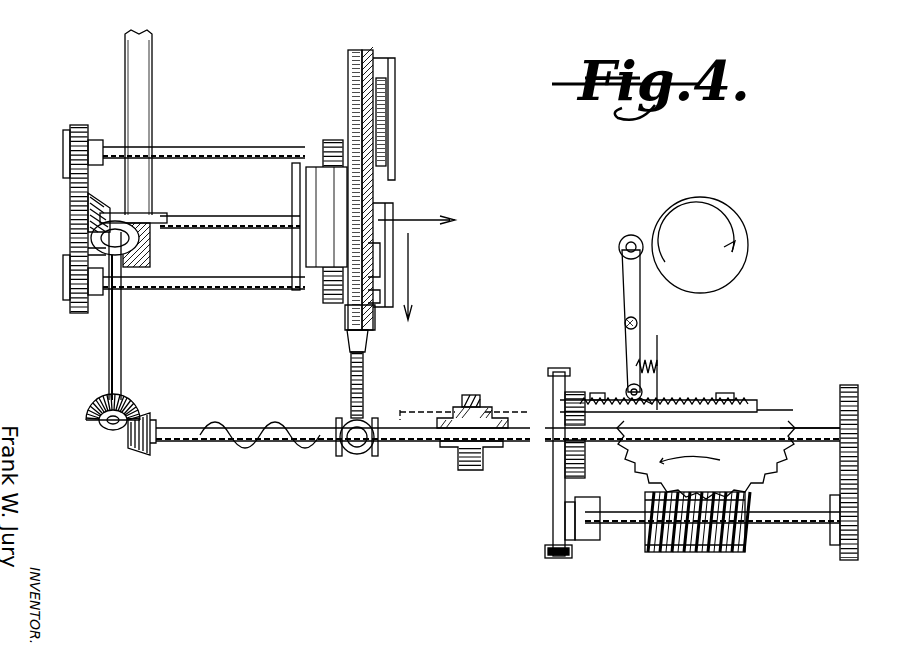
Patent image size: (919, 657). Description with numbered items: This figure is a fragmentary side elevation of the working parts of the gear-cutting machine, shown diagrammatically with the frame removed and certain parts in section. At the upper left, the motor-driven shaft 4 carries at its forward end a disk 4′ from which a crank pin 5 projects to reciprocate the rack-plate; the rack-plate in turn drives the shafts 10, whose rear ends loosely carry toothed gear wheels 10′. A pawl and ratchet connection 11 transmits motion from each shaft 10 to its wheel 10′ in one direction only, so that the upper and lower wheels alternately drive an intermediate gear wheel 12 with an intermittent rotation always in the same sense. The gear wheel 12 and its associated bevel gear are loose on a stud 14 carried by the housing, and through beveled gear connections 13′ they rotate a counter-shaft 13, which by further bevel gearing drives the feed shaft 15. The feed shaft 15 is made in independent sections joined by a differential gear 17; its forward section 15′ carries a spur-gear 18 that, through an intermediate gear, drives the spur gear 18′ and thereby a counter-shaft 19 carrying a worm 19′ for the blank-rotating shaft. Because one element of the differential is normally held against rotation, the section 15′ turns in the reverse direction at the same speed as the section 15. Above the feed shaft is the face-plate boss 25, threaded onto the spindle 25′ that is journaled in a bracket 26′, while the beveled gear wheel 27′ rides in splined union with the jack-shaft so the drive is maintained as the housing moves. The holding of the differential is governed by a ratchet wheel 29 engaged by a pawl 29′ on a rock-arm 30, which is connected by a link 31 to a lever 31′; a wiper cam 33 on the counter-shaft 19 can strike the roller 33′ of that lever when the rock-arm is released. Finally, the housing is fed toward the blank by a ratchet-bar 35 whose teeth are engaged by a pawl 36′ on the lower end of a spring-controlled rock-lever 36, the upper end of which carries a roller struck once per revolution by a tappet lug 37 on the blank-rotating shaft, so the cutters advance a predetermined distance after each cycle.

The shaft 4 is at (230, 208).
The disk 4' is at (316, 212).
The crank pin 5 is at (300, 228).
The shafts 10 is at (204, 210).
The toothed gear wheels 10' is at (77, 219).
The pawl and ratchet connection 11 is at (63, 150).
The intermediate gear wheel 12 is at (72, 232).
The counter-shaft 13 is at (135, 316).
The beveled gear connections 13' is at (106, 202).
The stud 14 is at (158, 224).
The feed shaft 15 is at (498, 451).
The forward section of feed shaft 15' is at (810, 402).
The differential gear 17 is at (483, 455).
The spur-gear 18 is at (871, 472).
The spur gear 18' is at (868, 520).
The counter-shaft 19 is at (712, 530).
The worm 19' is at (697, 526).
The boss 25 is at (336, 343).
The spindle 25' is at (335, 385).
The bracket 26' is at (357, 447).
The beveled gear wheel 27' is at (260, 449).
The ratchet wheel 29 is at (685, 460).
The pawl 29' is at (589, 408).
The rock-arm 30 is at (575, 392).
The link 31 is at (656, 462).
The lever 31' is at (545, 564).
The wiper cam 33 is at (565, 509).
The roller 33' is at (598, 525).
The ratchet-bar 35 is at (425, 410).
The rock-lever 36 is at (628, 322).
The pawl 36' is at (660, 389).
The tappet lug 37 is at (665, 205).